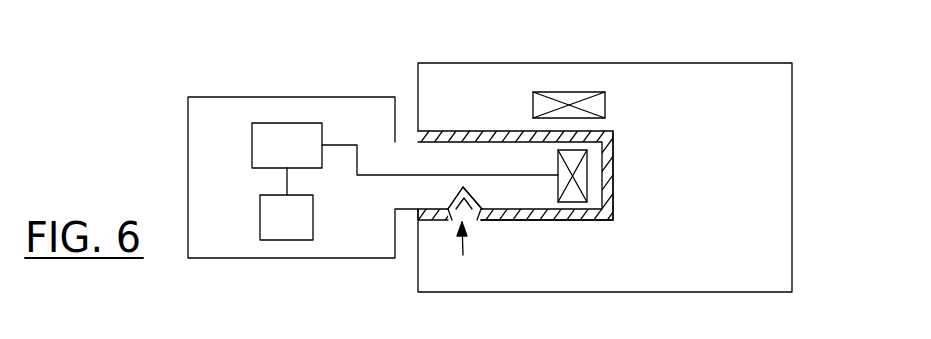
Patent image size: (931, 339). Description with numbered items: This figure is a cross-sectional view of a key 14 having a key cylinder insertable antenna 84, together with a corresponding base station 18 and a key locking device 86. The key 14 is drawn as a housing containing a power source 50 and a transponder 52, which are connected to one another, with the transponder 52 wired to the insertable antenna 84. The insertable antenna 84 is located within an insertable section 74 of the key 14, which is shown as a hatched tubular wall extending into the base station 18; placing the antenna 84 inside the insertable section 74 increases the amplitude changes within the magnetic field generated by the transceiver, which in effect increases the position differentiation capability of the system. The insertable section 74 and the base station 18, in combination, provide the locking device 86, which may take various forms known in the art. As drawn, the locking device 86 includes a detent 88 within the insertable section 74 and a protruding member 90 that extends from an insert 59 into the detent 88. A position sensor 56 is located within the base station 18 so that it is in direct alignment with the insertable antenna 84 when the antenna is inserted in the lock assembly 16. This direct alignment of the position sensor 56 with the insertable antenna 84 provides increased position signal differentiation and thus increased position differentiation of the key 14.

The key 14 is at (310, 258).
The transponder 52 is at (252, 147).
The power source 50 is at (260, 218).
The base station 18 is at (792, 108).
The insertable section 74 is at (442, 140).
The lock assembly 16 is at (613, 173).
The insert 59 is at (613, 207).
The position sensor 56 is at (605, 103).
The insertable antenna 84 is at (558, 190).
The detent 88 is at (450, 193).
The protruding member 90 is at (470, 212).
The key locking device 86 is at (467, 255).